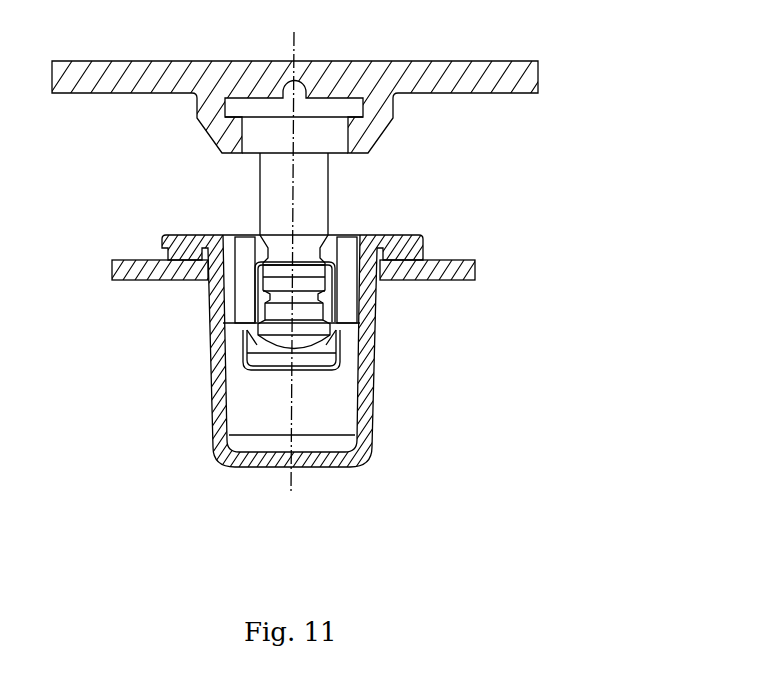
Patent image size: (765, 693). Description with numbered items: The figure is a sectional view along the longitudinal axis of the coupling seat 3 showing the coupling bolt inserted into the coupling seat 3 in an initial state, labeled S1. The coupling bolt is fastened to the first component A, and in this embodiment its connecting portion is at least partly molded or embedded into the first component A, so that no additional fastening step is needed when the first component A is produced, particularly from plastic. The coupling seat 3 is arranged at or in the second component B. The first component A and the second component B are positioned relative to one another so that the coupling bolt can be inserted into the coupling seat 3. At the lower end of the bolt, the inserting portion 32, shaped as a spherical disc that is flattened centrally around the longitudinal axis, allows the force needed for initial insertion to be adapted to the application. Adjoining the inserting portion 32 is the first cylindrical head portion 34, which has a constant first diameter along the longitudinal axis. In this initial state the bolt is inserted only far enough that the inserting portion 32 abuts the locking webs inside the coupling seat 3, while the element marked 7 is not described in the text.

The first component A is at (530, 72).
The second component B is at (470, 267).
The coupling seat 3 is at (380, 422).
The ball stud 7 is at (338, 183).
The inserting portion 32 is at (317, 342).
The first cylindrical head portion 34 is at (257, 323).
The connection state S1 is at (295, 527).